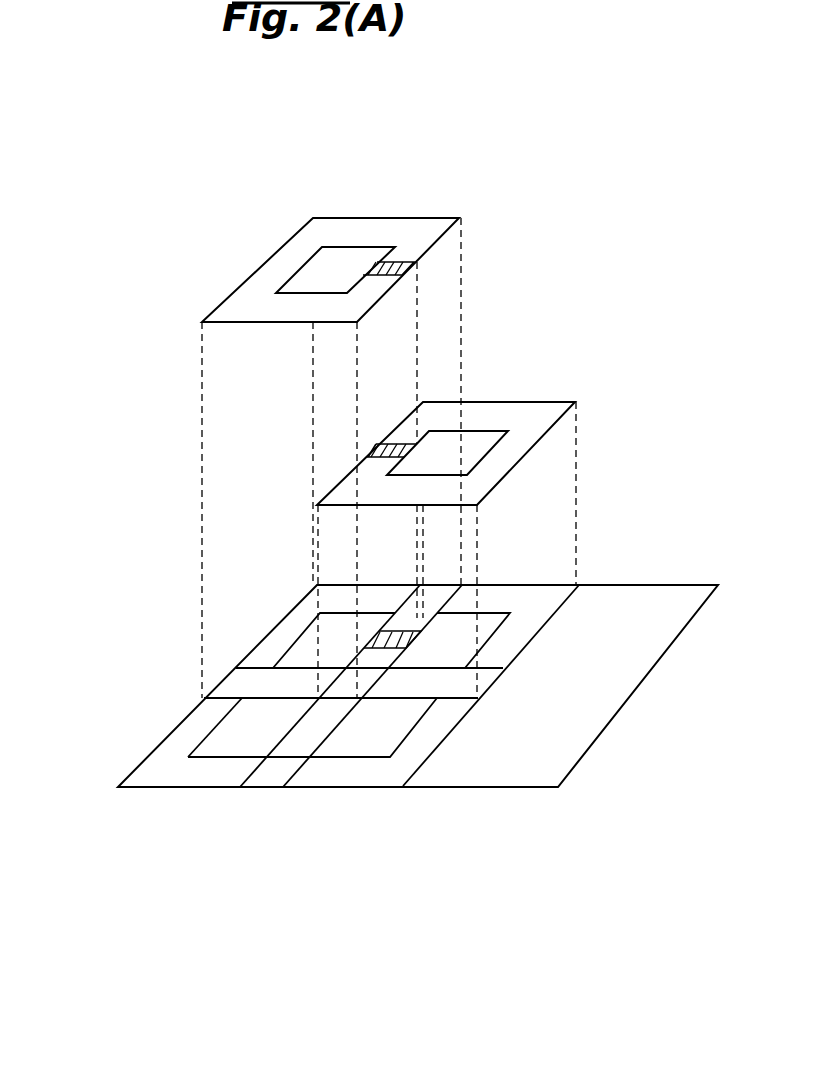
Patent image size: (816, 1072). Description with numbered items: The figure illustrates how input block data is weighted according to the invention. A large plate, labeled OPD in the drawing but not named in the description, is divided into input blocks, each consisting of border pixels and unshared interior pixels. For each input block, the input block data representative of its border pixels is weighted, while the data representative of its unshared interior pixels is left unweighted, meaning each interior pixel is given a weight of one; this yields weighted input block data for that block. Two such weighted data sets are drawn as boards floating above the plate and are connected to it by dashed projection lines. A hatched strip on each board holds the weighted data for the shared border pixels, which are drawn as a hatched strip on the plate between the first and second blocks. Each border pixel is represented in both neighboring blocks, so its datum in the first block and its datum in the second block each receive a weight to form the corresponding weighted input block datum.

The optical device substrate OPD is at (652, 670).